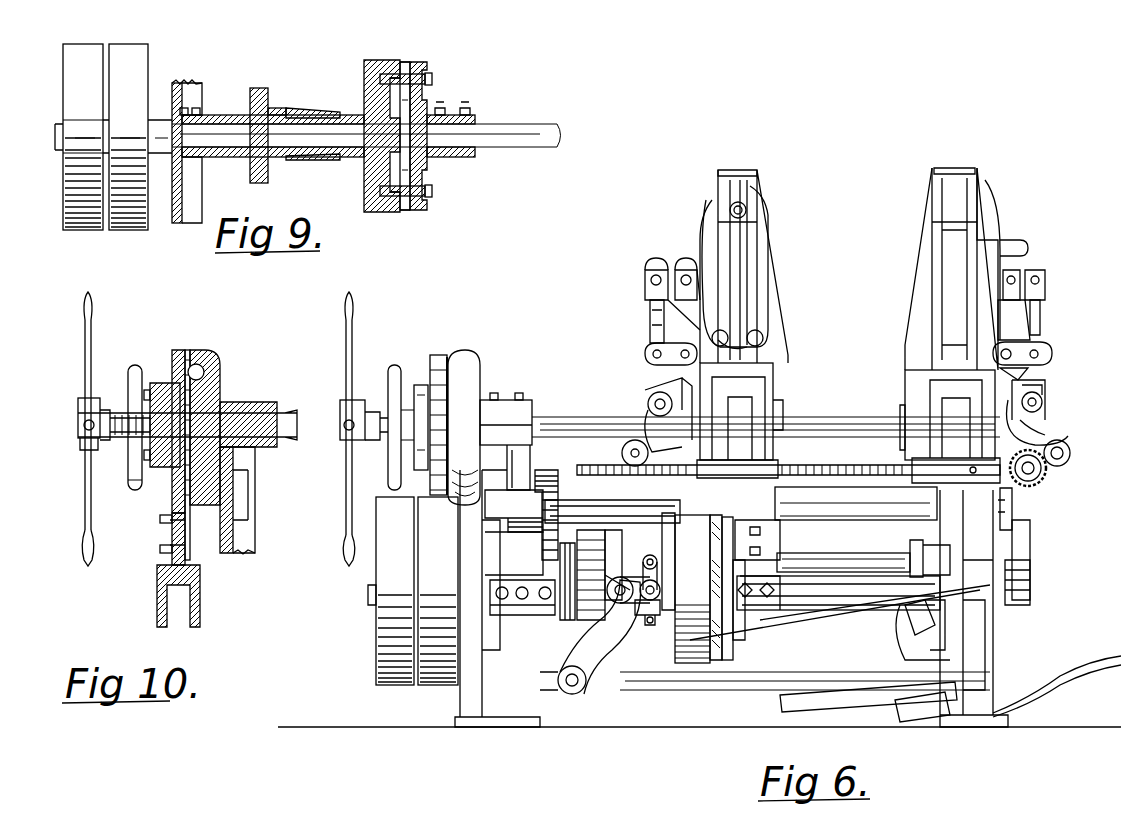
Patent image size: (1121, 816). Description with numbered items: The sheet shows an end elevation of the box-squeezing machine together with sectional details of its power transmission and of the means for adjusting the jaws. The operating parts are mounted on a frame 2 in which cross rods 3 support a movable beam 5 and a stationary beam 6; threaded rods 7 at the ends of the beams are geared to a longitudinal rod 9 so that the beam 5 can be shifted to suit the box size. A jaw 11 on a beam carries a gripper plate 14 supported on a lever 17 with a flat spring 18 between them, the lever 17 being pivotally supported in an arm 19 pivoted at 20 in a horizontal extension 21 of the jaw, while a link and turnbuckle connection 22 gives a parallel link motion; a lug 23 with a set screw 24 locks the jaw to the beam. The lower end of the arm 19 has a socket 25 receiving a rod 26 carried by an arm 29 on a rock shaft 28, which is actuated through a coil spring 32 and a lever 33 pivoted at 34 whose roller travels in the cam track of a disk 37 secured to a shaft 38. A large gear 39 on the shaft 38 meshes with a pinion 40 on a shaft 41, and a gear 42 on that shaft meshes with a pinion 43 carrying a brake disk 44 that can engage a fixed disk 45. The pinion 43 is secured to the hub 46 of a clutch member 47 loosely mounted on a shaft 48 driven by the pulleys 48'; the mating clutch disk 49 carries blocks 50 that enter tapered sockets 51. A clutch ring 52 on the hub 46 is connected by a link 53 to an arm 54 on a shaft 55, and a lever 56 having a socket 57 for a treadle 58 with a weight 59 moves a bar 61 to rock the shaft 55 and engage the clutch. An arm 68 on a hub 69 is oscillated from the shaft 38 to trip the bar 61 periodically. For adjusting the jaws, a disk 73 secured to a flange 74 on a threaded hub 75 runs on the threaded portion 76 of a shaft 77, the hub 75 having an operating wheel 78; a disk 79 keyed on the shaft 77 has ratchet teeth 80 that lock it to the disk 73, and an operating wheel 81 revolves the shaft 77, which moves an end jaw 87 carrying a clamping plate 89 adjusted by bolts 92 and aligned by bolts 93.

In FIG. 9, the frame 2 is at (176, 222).
In FIG. 10, the frame 2 is at (248, 537).
In FIG. 6, the frame 2 is at (993, 637).
In FIG. 6, the cross rods 3 is at (818, 505).
In FIG. 6, the movable beam 5 is at (775, 376).
In FIG. 6, the stationary beam 6 is at (915, 375).
In FIG. 6, the threaded rods 7 is at (813, 470).
In FIG. 6, the longitudinal rod 9 is at (1040, 482).
In FIG. 6, the jaw 11 is at (917, 262).
In FIG. 6, the gripper plate 14 is at (978, 180).
In FIG. 6, the lever 17 is at (1022, 270).
In FIG. 6, the flat spring 18 is at (990, 230).
In FIG. 6, the arm 19 is at (1015, 315).
In FIG. 6, the pivot 20 is at (1012, 352).
In FIG. 6, the horizontal extension 21 is at (1042, 356).
In FIG. 6, the link and turnbuckle connection 22 is at (1040, 298).
In FIG. 6, the lug 23 is at (1028, 372).
In FIG. 6, the set screw 24 is at (1044, 402).
In FIG. 6, the socket 25 is at (655, 390).
In FIG. 6, the rod 26 is at (650, 398).
In FIG. 6, the rock shaft 28 is at (1070, 455).
In FIG. 6, the arm 29 is at (1060, 434).
In FIG. 6, the coil spring 32 is at (630, 440).
In FIG. 6, the lever 33 is at (1012, 522).
In FIG. 6, the pivot 34 is at (1025, 530).
In FIG. 6, the disk 37 is at (1032, 582).
In FIG. 6, the shaft 38 is at (842, 558).
In FIG. 6, the large gear 39 is at (540, 470).
In FIG. 6, the pinion 40 is at (530, 620).
In FIG. 6, the shaft 41 is at (808, 610).
In FIG. 6, the gear 42 is at (606, 530).
In FIG. 9, the pinion 43 is at (298, 106).
In FIG. 6, the pinion 43 is at (583, 540).
In FIG. 9, the disk 44 is at (268, 100).
In FIG. 6, the disk 44 is at (578, 530).
In FIG. 9, the disk 45 is at (252, 86).
In FIG. 6, the disk 45 is at (562, 575).
In FIG. 9, the hub 46 is at (310, 158).
In FIG. 6, the hub 46 is at (665, 578).
In FIG. 9, the clutch member 47 is at (372, 62).
In FIG. 6, the clutch member 47 is at (688, 665).
In FIG. 9, the shaft 48 is at (64, 137).
In FIG. 6, the shaft 48 is at (368, 591).
In FIG. 9, the driving pulleys 48' is at (88, 154).
In FIG. 6, the driving pulleys 48' is at (382, 596).
In FIG. 9, the disk 49 is at (428, 176).
In FIG. 6, the disk 49 is at (730, 630).
In FIG. 9, the blocks 50 is at (405, 196).
In FIG. 6, the blocks 50 is at (716, 650).
In FIG. 9, the tapered sockets 51 is at (380, 200).
In FIG. 6, the clutch ring 52 is at (650, 625).
In FIG. 6, the link 53 is at (637, 585).
In FIG. 6, the arm 54 is at (598, 668).
In FIG. 6, the shaft 55 is at (572, 686).
In FIG. 6, the lever 56 is at (965, 674).
In FIG. 6, the socket 57 is at (915, 715).
In FIG. 6, the treadle 58 is at (1085, 674).
In FIG. 6, the weight 59 is at (840, 708).
In FIG. 6, the bar 61 is at (852, 620).
In FIG. 6, the arm 68 is at (950, 630).
In FIG. 6, the hub 69 is at (918, 545).
In FIG. 10, the disk 73 is at (182, 490).
In FIG. 6, the disk 73 is at (436, 355).
In FIG. 10, the flange 74 is at (160, 465).
In FIG. 6, the flange 74 is at (420, 385).
In FIG. 10, the hub 75 is at (130, 440).
In FIG. 6, the hub 75 is at (402, 420).
In FIG. 10, the threaded portion 76 is at (100, 417).
In FIG. 6, the threaded portion 76 is at (344, 430).
In FIG. 10, the shaft 77 is at (262, 447).
In FIG. 6, the shaft 77 is at (548, 418).
In FIG. 10, the operating wheel 78 is at (133, 368).
In FIG. 6, the operating wheel 78 is at (392, 370).
In FIG. 10, the disk 79 is at (212, 352).
In FIG. 6, the disk 79 is at (475, 366).
In FIG. 10, the ratchet teeth 80 is at (182, 352).
In FIG. 6, the ratchet teeth 80 is at (448, 358).
In FIG. 10, the operating wheel 81 is at (85, 370).
In FIG. 6, the operating wheel 81 is at (346, 510).
In FIG. 6, the end jaw 87 is at (738, 252).
In FIG. 6, the clamping plate 89 is at (755, 172).
In FIG. 6, the adjusting bolt 92 is at (746, 208).
In FIG. 6, the bolt 93 is at (762, 337).